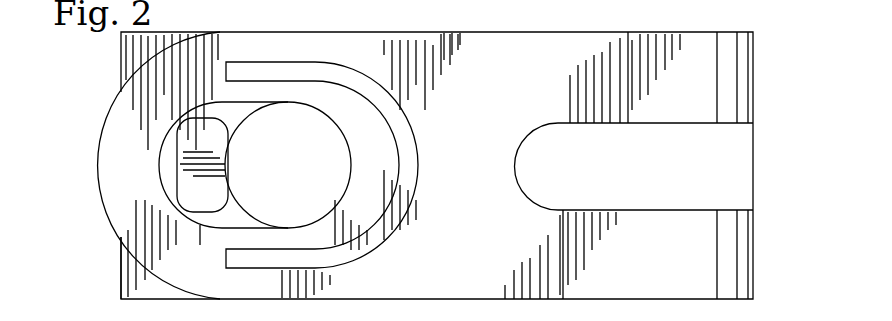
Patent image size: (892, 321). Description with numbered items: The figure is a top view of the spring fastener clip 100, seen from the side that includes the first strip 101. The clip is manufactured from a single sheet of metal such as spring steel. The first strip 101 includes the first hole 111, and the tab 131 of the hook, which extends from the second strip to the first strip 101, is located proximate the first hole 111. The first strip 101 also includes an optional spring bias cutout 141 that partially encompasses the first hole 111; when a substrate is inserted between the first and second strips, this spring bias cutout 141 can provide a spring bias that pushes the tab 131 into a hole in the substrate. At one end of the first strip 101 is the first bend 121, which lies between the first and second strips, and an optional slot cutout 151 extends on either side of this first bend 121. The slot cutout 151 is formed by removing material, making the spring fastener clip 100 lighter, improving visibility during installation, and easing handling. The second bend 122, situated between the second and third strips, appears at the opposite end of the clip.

The spring fastener clip 100 is at (87, 71).
The first strip 101 is at (532, 96).
The first hole 111 is at (322, 168).
The first bend 121 is at (753, 62).
The second bend 122 is at (121, 285).
The tab 131 is at (210, 134).
The spring bias cutout 141 is at (380, 230).
The slot cutout 151 is at (733, 170).